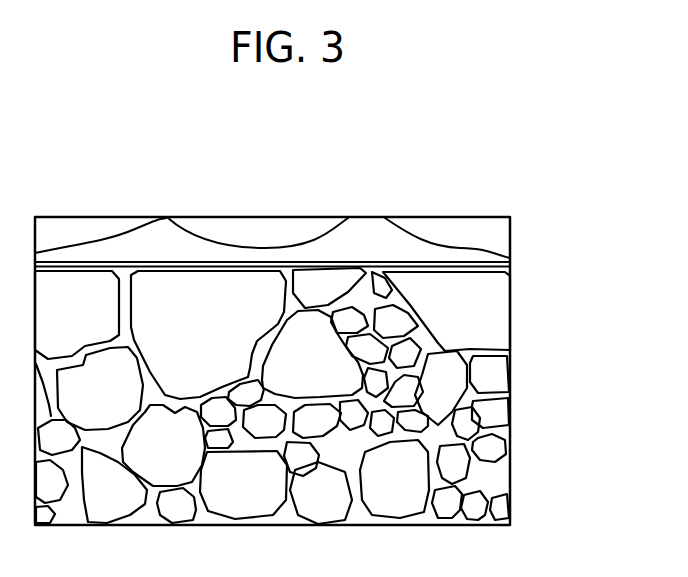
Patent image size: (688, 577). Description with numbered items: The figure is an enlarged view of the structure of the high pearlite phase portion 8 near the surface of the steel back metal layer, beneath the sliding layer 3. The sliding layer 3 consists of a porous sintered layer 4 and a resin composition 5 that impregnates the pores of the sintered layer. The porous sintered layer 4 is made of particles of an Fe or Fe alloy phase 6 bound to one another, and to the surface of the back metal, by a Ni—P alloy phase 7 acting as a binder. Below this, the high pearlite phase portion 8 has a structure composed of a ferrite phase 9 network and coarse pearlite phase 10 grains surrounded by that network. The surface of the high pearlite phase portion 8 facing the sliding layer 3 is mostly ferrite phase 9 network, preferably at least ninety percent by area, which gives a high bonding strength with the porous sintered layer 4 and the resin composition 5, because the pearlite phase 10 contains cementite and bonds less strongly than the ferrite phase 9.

The sliding layer 3 is at (511, 241).
The porous sintered layer 4 is at (272, 191).
The resin composition 5 is at (117, 230).
The Fe or Fe alloy phase 6 is at (257, 232).
The Ni—P alloy phase 7 is at (372, 243).
The high pearlite phase portion 8 is at (511, 323).
The ferrite phase 9 is at (123, 266).
The pearlite phase 10 is at (498, 413).